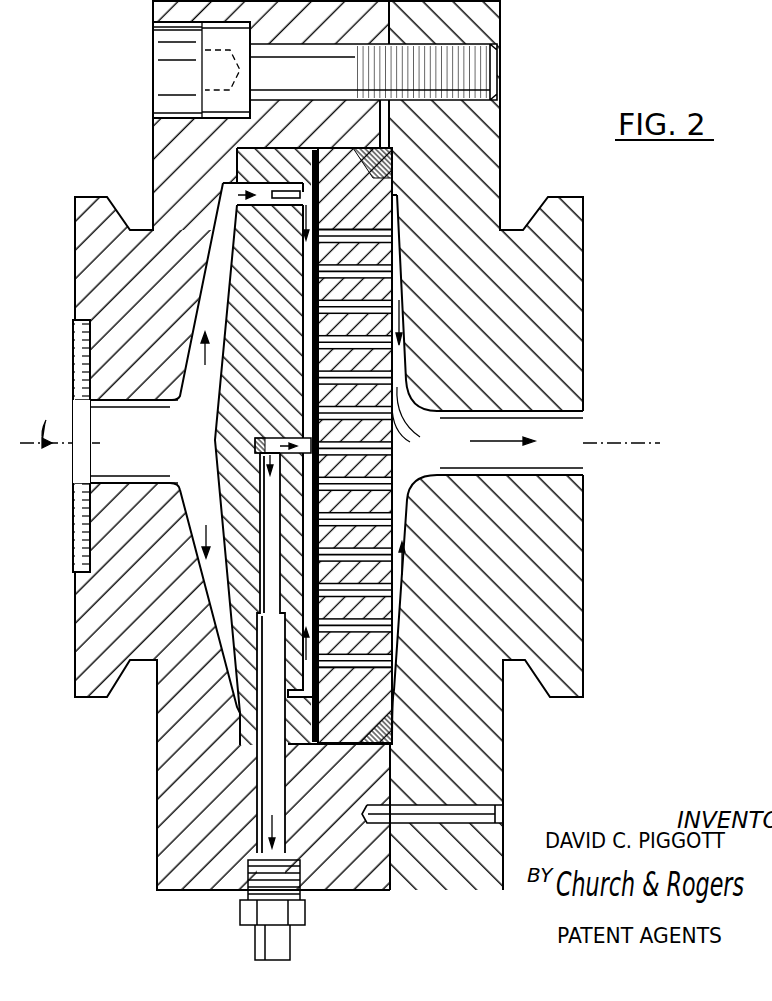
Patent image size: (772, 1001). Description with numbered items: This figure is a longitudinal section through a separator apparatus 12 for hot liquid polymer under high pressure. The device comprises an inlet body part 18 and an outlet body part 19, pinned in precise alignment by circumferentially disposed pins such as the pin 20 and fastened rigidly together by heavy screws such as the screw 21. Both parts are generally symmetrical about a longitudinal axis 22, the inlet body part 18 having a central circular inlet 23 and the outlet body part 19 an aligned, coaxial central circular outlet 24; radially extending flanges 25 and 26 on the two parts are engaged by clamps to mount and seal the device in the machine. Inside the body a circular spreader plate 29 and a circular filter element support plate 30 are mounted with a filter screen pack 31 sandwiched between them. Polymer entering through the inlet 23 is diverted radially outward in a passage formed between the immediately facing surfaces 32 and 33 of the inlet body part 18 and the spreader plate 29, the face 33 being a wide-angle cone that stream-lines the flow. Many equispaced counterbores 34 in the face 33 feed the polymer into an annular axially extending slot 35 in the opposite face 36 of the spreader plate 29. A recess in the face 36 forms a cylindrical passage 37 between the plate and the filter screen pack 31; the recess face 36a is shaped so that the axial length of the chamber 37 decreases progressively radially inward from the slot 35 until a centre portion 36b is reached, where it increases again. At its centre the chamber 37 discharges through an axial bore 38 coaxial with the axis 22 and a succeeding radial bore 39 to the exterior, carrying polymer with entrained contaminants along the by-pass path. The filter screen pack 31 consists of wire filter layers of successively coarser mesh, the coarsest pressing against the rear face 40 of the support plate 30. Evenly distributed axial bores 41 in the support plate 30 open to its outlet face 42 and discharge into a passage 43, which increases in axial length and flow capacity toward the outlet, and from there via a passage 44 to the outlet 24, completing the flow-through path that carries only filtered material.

The filter unit 12 is at (316, 445).
The inlet body part 18 is at (80, 231).
The outlet body part 19 is at (565, 246).
The pin 20 is at (470, 807).
The screw 21 is at (476, 78).
The longitudinal axis 22 is at (99, 436).
The central circular inlet 23 is at (73, 352).
The central circular outlet 24 is at (592, 424).
The radially extending flange 25 is at (95, 698).
The radially extending flange 26 is at (548, 700).
The spreader plate 29 is at (237, 313).
The filter element support plate 30 is at (375, 197).
The filter screen pack 31 is at (320, 265).
The facing surface 32 is at (176, 522).
The facing surface 33 is at (217, 510).
The counterbore 34 is at (256, 188).
The annular axially extending slot 35 is at (287, 192).
The face of the spreader plate 36 is at (306, 160).
The face of the recess 36a is at (297, 318).
The centre portion 36b is at (280, 412).
The cylindrical passage 37 is at (308, 257).
The axial bore 38 is at (260, 432).
The radial bore 39 is at (270, 803).
The rear face 40 is at (320, 713).
The axial bore 41 is at (385, 628).
The outlet face 42 is at (392, 465).
The passage 43 is at (400, 361).
The passage 44 is at (566, 459).